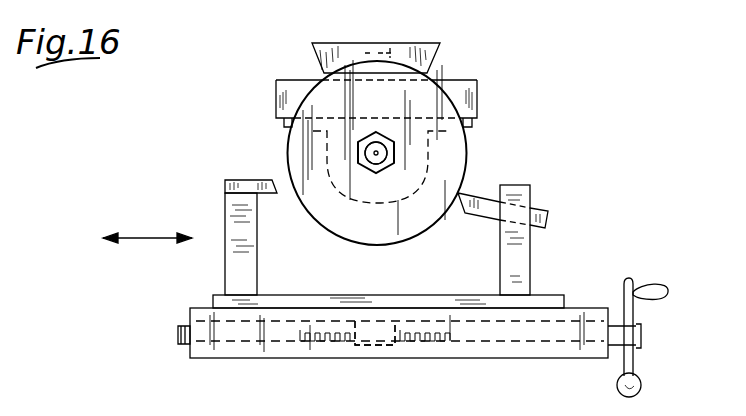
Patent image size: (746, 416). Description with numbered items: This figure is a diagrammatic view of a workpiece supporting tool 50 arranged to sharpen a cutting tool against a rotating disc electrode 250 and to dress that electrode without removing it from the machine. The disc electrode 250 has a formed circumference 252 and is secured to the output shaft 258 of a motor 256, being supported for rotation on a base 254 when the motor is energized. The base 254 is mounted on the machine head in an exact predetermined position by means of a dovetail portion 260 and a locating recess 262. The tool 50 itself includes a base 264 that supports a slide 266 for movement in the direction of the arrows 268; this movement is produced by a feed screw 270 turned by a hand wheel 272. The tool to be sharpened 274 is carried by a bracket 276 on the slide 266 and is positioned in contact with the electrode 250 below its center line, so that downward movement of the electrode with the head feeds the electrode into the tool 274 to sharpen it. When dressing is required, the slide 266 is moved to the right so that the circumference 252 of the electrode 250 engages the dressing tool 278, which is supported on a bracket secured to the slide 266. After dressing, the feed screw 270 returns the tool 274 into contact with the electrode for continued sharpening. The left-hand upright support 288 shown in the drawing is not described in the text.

The tool 50 is at (600, 252).
The disc electrode 250 is at (458, 156).
The formed circumference 252 is at (396, 242).
The base 254 is at (478, 93).
The motor 256 is at (328, 229).
The output shaft 258 is at (362, 160).
The dovetail portion 260 is at (320, 44).
The locating recess 262 is at (388, 45).
The base 264 is at (465, 349).
The slide 266 is at (357, 306).
The arrows 268 is at (137, 237).
The feed screw 270 is at (283, 341).
The hand wheel 272 is at (668, 289).
The tool to be sharpened 274 is at (543, 209).
The bracket 276 is at (527, 251).
The dressing tool 278 is at (253, 180).
The left post 288 is at (222, 255).